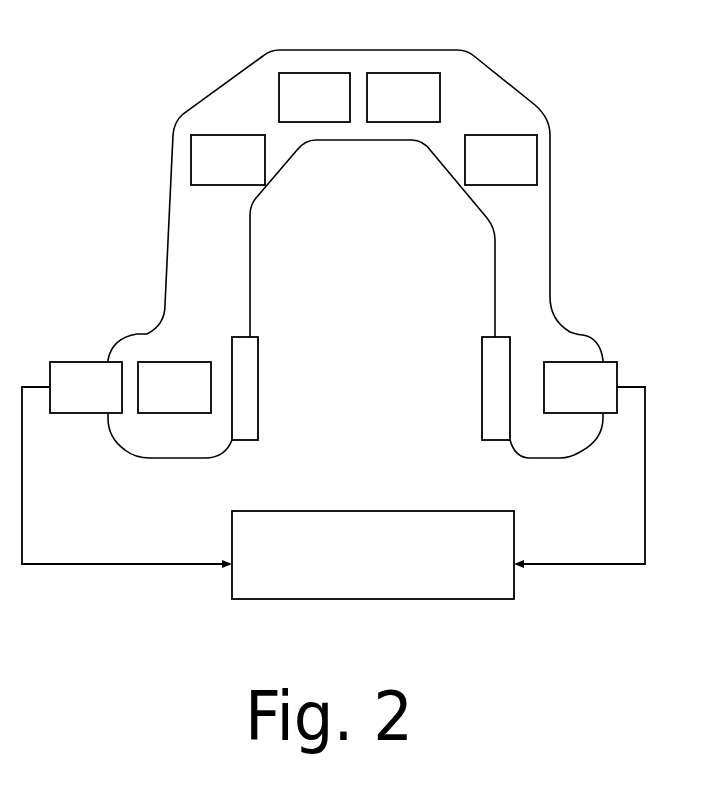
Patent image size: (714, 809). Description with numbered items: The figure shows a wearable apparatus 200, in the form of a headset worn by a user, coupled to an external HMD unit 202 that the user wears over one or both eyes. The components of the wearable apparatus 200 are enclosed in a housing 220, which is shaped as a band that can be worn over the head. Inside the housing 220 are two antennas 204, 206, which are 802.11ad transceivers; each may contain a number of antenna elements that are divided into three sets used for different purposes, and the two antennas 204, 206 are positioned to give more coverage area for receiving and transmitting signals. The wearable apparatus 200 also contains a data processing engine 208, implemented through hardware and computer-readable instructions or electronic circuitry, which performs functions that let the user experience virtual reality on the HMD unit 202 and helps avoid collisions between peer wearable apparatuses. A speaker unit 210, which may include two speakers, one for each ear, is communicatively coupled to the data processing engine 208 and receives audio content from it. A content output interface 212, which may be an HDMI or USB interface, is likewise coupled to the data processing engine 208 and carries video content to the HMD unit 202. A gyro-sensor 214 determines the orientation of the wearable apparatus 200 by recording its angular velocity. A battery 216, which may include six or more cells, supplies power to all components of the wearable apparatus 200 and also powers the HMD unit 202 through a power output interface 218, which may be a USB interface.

The wearable apparatus 200 is at (333, 309).
The HMD unit 202 is at (348, 569).
The antenna 204 is at (204, 176).
The antenna 206 is at (477, 176).
The data processing engine 208 is at (151, 404).
The speaker unit 210 is at (457, 379).
The content output interface 212 is at (62, 404).
The gyro-sensor 214 is at (291, 114).
The battery 216 is at (380, 114).
The power output interface 218 is at (557, 404).
The housing 220 is at (510, 93).